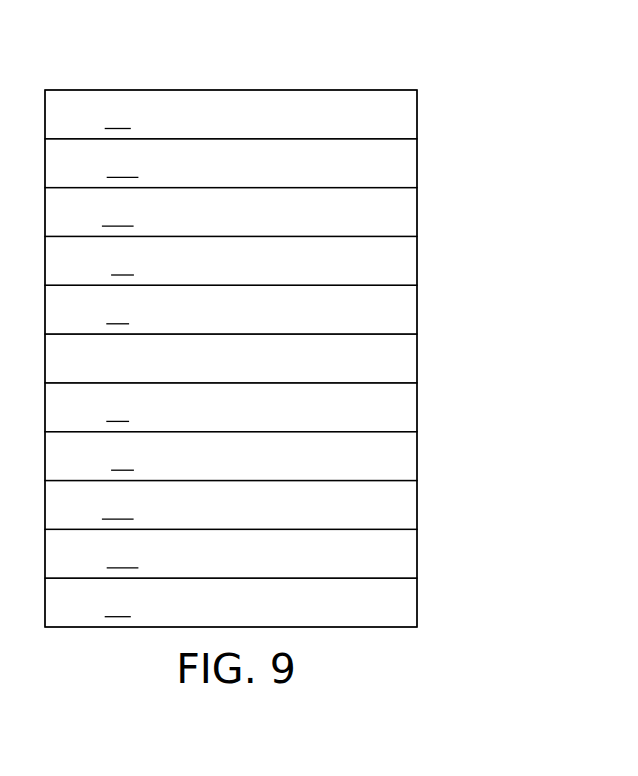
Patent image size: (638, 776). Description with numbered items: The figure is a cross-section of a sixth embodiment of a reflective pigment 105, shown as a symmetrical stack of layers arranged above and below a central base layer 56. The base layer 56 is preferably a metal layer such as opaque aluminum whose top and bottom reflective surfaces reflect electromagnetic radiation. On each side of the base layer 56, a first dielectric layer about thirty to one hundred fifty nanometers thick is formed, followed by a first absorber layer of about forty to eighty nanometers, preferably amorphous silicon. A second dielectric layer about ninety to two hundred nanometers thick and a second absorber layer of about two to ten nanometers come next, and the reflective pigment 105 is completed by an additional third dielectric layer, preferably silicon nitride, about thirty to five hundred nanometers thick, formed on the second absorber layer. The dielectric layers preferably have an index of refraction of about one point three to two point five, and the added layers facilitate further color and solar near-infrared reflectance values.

The reflective pigment 105 is at (347, 59).
The base layer 56 is at (398, 357).